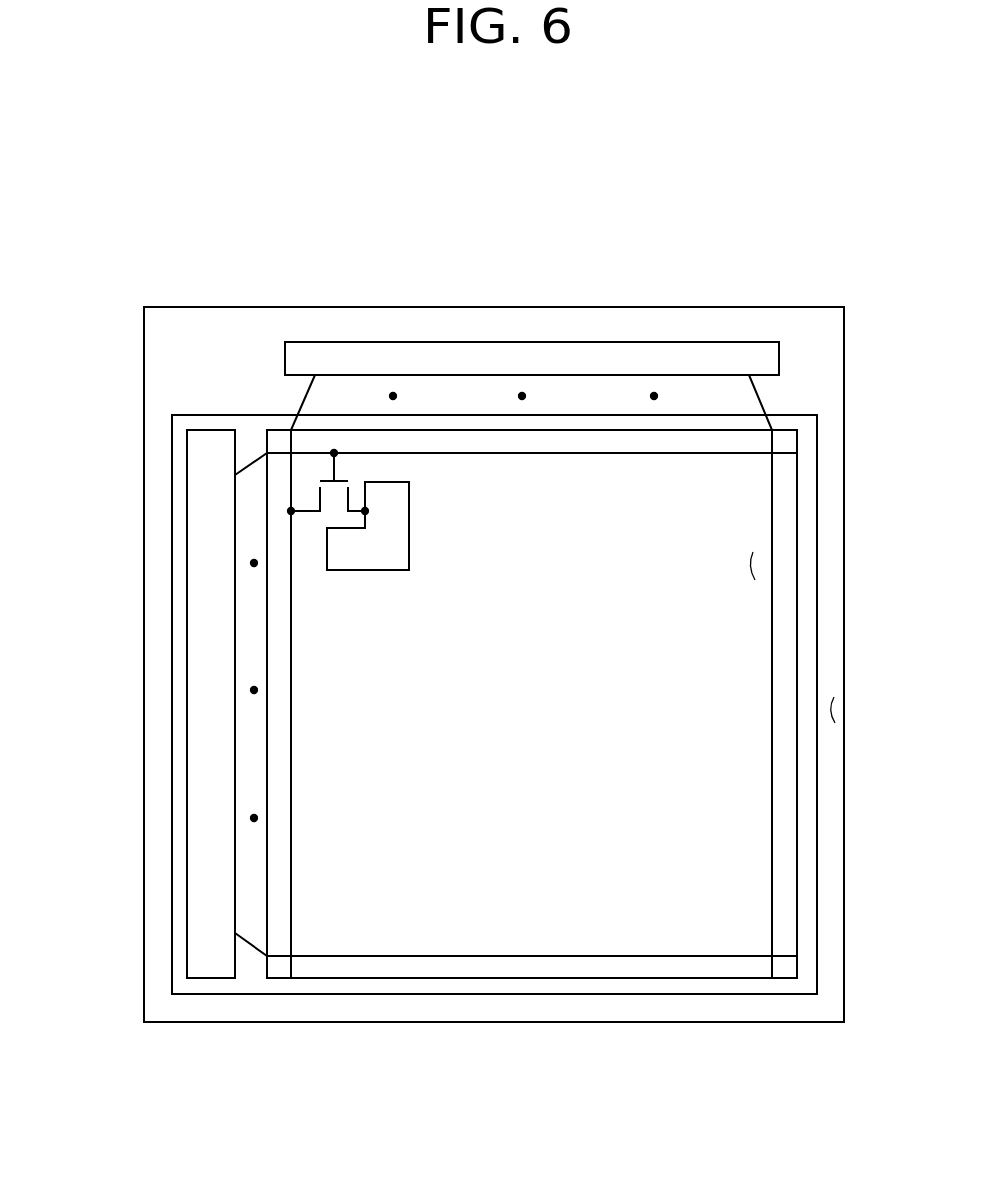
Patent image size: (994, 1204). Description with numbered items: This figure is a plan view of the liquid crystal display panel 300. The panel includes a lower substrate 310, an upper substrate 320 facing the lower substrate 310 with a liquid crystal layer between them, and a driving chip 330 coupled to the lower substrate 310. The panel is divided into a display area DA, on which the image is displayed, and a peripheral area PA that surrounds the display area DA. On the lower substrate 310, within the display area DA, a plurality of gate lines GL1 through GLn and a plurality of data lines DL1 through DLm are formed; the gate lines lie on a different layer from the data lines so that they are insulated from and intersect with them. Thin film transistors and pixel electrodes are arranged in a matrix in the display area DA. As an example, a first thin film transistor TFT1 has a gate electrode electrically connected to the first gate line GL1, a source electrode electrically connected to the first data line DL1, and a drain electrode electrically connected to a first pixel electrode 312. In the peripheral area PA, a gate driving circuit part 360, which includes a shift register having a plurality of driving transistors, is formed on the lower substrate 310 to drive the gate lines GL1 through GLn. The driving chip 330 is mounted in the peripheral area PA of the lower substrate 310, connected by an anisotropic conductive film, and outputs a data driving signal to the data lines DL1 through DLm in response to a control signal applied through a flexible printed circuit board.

The liquid crystal display panel 300 is at (300, 230).
The lower substrate 310 is at (158, 342).
The upper substrate 320 is at (172, 466).
The driving chip 330 is at (427, 355).
The gate driving circuit part 360 is at (187, 580).
The first pixel electrode 312 is at (410, 525).
The first thin film transistor TFT1 is at (321, 520).
The first gate line GL1 is at (577, 455).
The n-th gate line GLn is at (578, 955).
The first data line DL1 is at (291, 722).
The m-th data line DLm is at (772, 721).
The display area DA is at (756, 557).
The peripheral area PA is at (837, 708).